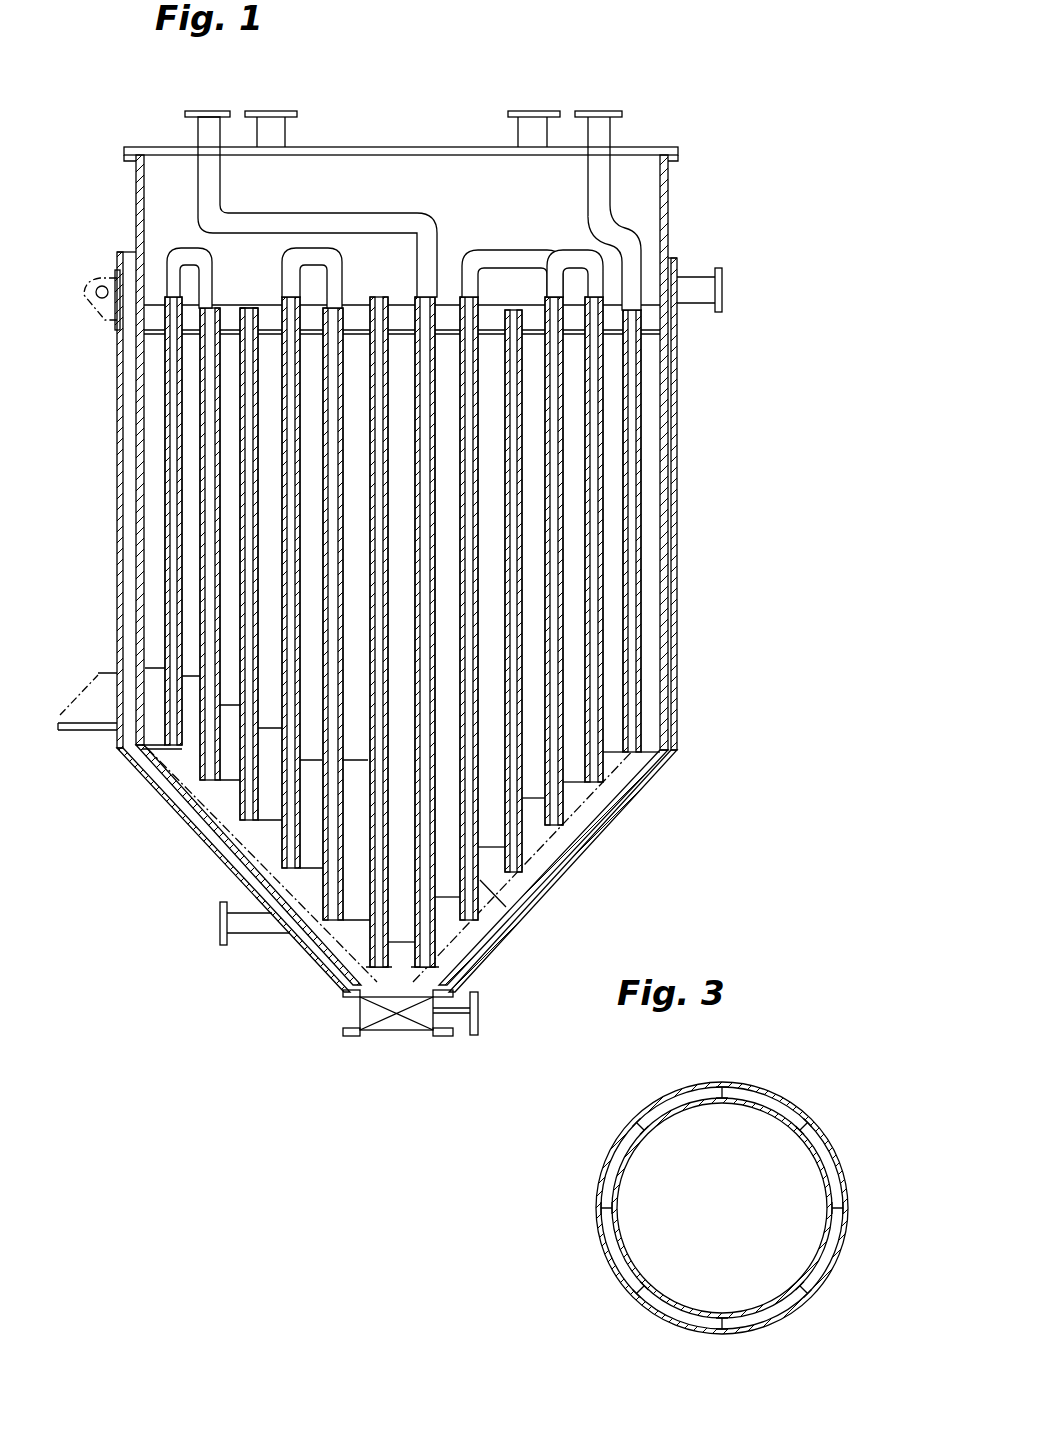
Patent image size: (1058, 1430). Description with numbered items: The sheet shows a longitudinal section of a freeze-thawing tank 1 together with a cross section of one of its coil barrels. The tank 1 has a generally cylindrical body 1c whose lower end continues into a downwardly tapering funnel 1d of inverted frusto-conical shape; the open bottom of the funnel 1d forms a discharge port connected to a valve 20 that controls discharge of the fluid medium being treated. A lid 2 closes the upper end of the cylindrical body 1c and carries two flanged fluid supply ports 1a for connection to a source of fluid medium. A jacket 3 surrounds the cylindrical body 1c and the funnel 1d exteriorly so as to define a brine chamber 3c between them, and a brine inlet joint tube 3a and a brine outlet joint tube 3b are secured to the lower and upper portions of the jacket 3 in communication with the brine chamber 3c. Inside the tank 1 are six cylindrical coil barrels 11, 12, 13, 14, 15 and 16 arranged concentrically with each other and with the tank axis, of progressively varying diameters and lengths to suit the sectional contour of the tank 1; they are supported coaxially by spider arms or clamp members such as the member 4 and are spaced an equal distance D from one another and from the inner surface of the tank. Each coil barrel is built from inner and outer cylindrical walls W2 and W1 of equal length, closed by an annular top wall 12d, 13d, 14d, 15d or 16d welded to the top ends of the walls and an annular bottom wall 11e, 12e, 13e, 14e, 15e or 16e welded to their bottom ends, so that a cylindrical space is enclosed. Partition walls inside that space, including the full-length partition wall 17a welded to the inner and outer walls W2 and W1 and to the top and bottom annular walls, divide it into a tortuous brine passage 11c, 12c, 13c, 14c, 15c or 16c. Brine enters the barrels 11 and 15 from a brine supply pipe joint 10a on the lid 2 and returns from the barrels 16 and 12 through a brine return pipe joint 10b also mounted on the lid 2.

In FIG. 1, the freeze-thawing tank 1 is at (710, 156).
In FIG. 1, the flanged fluid supply port 1a is at (272, 111).
In FIG. 1, the cylindrical body 1c is at (666, 550).
In FIG. 1, the downwardly tapering funnel 1d is at (602, 820).
In FIG. 1, the lid 2 is at (168, 150).
In FIG. 1, the jacket 3 is at (682, 515).
In FIG. 1, the brine inlet joint tube 3a is at (218, 935).
In FIG. 1, the brine outlet joint tube 3b is at (724, 288).
In FIG. 1, the brine chamber 3c is at (672, 600).
In FIG. 1, the radial spider arm 4 is at (150, 330).
In FIG. 1, the brine supply pipe joint 10a is at (208, 111).
In FIG. 1, the brine return pipe joint 10b is at (598, 111).
In FIG. 1, the cylindrical coil barrel 11 is at (422, 985).
In FIG. 1, the tortuous brine passage 11c is at (360, 975).
In FIG. 1, the annular bottom wall 11e is at (372, 1002).
In FIG. 1, the cylindrical coil barrel 12 is at (305, 942).
In FIG. 1, the tortuous brine passage 12c is at (470, 905).
In FIG. 1, the annular top wall 12d is at (332, 300).
In FIG. 1, the annular bottom wall 12e is at (432, 930).
In FIG. 1, the cylindrical coil barrel 13 is at (522, 722).
In FIG. 3, the cylindrical coil barrel 13 is at (810, 1110).
In FIG. 1, the tortuous brine passage 13c is at (512, 855).
In FIG. 1, the annular top wall 13d is at (512, 305).
In FIG. 1, the annular bottom wall 13e is at (340, 872).
In FIG. 1, the cylindrical coil barrel 14 is at (562, 682).
In FIG. 1, the tortuous brine passage 14c is at (248, 808).
In FIG. 1, the annular top wall 14d is at (248, 300).
In FIG. 1, the annular bottom wall 14e is at (550, 835).
In FIG. 1, the cylindrical coil barrel 15 is at (195, 520).
In FIG. 1, the tortuous brine passage 15c is at (195, 760).
In FIG. 1, the annular top wall 15d is at (210, 303).
In FIG. 1, the annular bottom wall 15e is at (212, 768).
In FIG. 1, the cylindrical coil barrel 16 is at (150, 555).
In FIG. 1, the tortuous brine passage 16c is at (165, 600).
In FIG. 1, the annular top wall 16d is at (645, 300).
In FIG. 1, the annular bottom wall 16e is at (643, 757).
In FIG. 3, the partition wall 17a is at (800, 1150).
In FIG. 1, the valve 20 is at (434, 1041).
In FIG. 1, the outer cylindrical wall W1 is at (168, 392).
In FIG. 3, the outer cylindrical wall W1 is at (772, 1092).
In FIG. 1, the inner cylindrical wall W2 is at (185, 405).
In FIG. 3, the inner cylindrical wall W2 is at (700, 1118).
In FIG. 1, the equal distance D is at (324, 776).